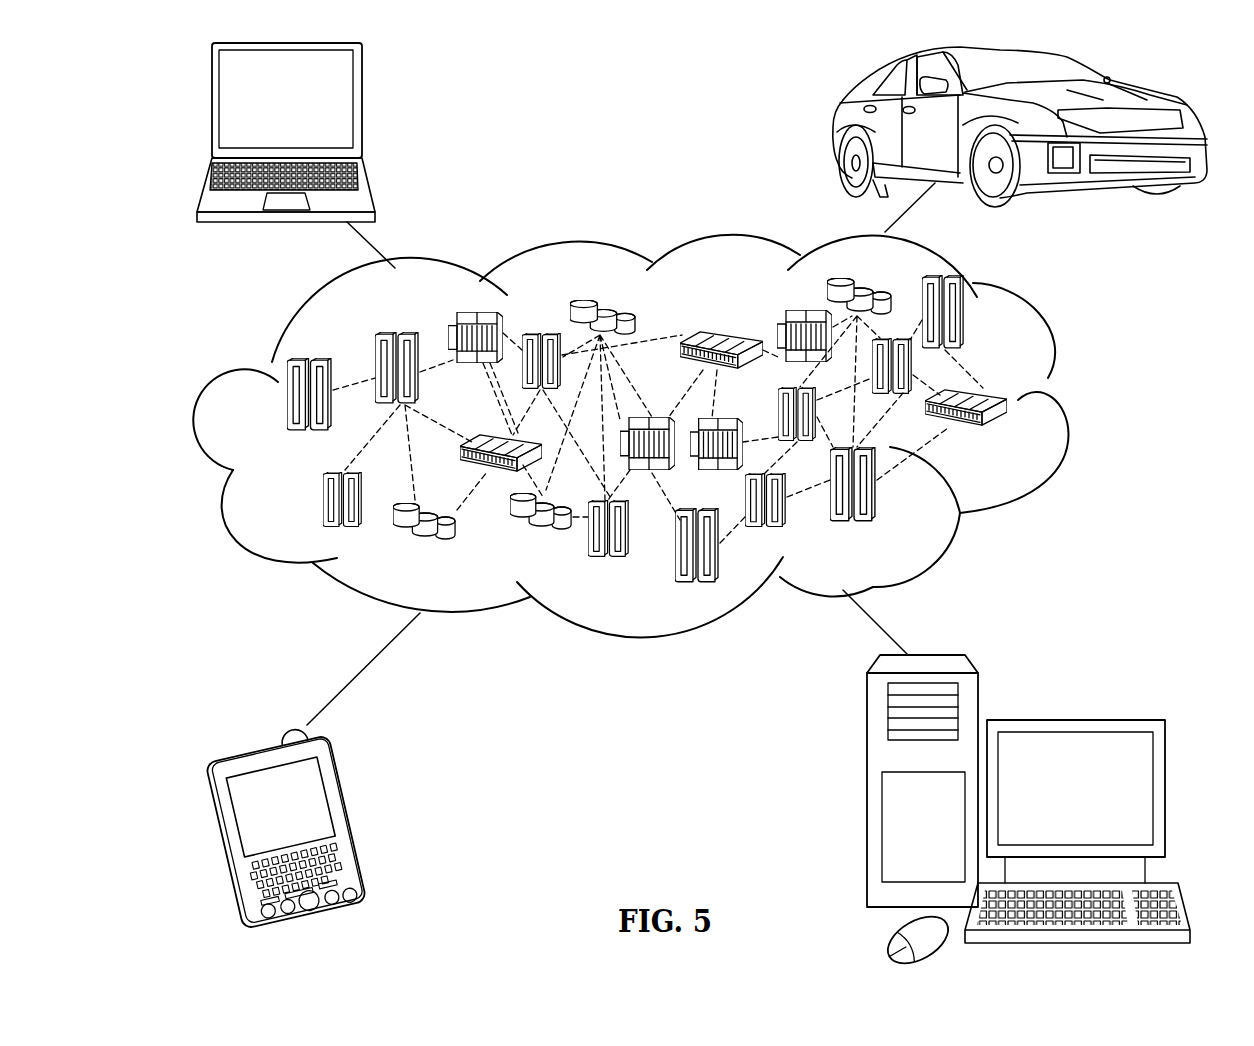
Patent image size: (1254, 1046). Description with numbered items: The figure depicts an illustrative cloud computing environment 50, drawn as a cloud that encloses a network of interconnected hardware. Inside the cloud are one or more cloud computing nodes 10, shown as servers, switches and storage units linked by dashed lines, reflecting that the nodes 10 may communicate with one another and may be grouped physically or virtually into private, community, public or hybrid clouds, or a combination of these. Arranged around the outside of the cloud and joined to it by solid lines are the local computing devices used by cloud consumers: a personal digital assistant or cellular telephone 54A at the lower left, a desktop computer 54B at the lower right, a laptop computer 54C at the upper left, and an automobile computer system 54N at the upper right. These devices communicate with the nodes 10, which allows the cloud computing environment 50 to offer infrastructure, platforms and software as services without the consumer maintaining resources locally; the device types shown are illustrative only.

The cloud computing node 10 is at (1017, 441).
The cloud computing environment 50 is at (670, 436).
The personal digital assistant or cellular telephone 54A is at (353, 820).
The desktop computer 54B is at (1070, 720).
The laptop computer 54C is at (362, 108).
The automobile computer system 54N is at (840, 128).